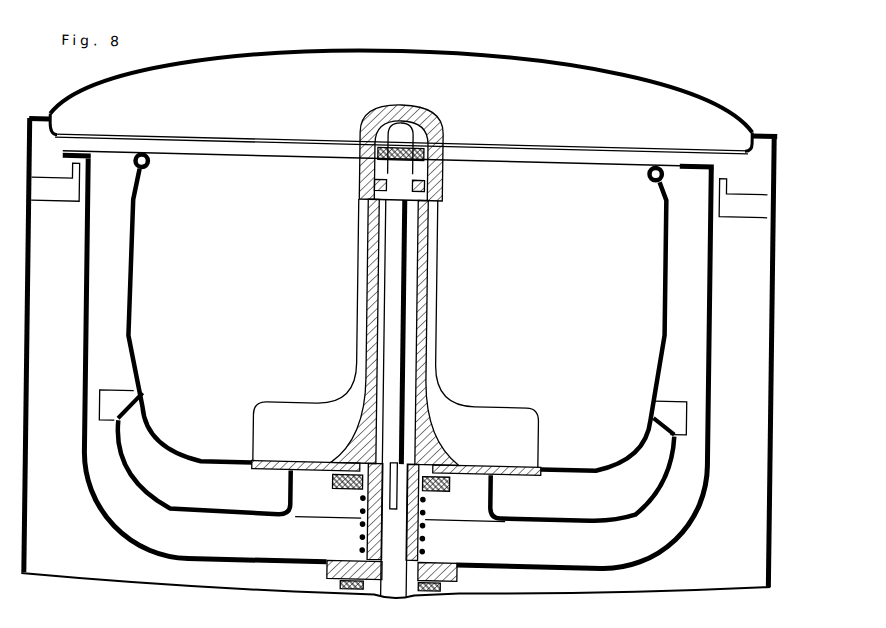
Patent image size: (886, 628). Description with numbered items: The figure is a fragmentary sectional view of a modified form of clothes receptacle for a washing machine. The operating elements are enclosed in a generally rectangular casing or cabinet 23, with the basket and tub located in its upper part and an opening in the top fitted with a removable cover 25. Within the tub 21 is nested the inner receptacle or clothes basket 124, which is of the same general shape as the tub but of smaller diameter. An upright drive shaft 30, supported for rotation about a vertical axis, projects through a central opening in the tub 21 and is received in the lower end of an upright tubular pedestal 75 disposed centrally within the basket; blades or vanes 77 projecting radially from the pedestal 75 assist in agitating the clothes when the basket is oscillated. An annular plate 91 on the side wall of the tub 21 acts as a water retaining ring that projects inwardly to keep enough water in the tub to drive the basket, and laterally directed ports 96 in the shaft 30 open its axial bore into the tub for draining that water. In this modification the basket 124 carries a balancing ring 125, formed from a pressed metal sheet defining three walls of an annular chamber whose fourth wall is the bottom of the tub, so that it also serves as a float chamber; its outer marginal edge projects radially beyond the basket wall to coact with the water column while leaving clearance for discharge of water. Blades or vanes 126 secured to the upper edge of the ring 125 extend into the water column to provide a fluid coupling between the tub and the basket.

The tub 21 is at (711, 327).
The casing or cabinet 23 is at (776, 570).
The removable cover 25 is at (558, 51).
The drive shaft 30 is at (419, 528).
The tubular pedestal 75 is at (435, 260).
The blades or vanes 77 is at (304, 397).
The annular plate 91 is at (688, 149).
The ports 96 is at (372, 552).
The clothes basket 124 is at (665, 275).
The balancing ring 125 is at (625, 502).
The blades or vanes 126 is at (118, 388).